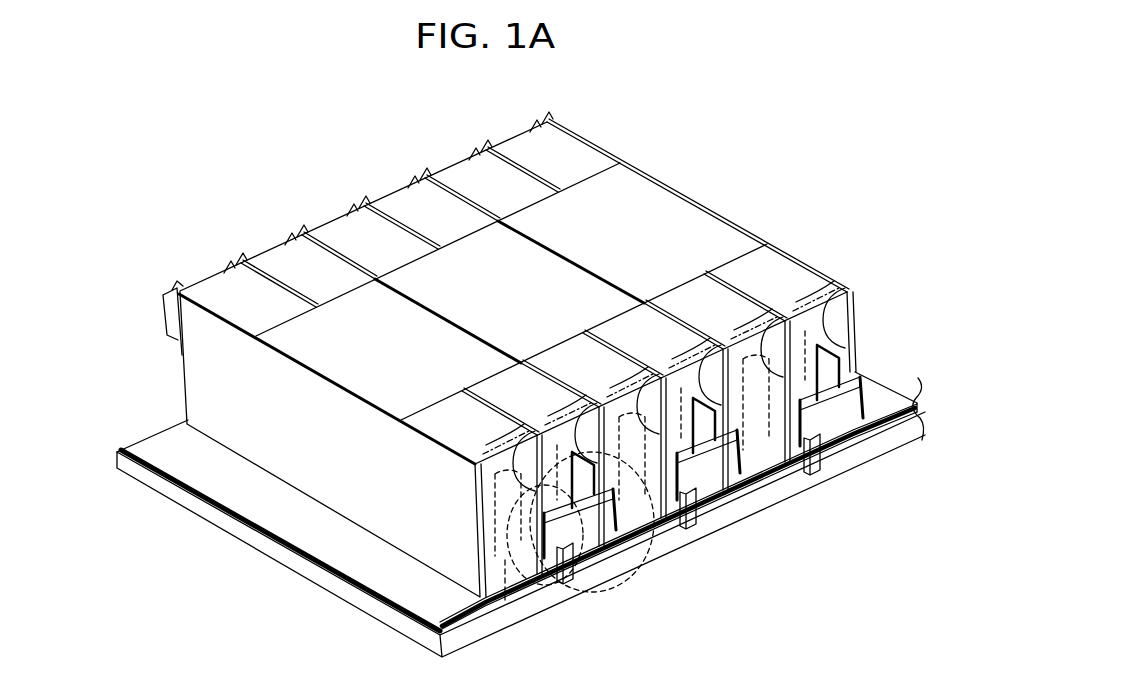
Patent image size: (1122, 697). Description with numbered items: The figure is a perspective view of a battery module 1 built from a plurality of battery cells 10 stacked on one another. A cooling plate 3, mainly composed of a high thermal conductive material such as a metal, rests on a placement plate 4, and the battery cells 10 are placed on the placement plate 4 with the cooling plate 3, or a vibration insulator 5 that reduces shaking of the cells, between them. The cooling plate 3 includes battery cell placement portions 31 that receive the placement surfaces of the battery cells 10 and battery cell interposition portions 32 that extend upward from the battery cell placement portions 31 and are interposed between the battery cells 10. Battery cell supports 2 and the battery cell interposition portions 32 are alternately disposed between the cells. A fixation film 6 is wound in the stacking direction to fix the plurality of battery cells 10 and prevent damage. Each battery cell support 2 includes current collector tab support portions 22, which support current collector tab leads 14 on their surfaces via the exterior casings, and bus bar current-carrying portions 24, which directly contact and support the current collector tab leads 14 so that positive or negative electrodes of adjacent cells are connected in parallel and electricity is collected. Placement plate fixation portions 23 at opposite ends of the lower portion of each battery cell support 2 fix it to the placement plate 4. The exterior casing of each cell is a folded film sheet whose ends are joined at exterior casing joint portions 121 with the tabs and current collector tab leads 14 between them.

The battery module 1 is at (684, 142).
The battery cell support 2 is at (484, 145).
The cooling plate 3 is at (109, 350).
The placement plate 4 is at (768, 500).
The vibration insulator 5 is at (470, 613).
The fixation film 6 is at (713, 233).
The battery cell 10 is at (213, 292).
The current collector tab lead 14 is at (545, 560).
The current collector tab support portion 22 is at (590, 498).
The placement plate fixation portion 23 is at (563, 548).
The bus bar current-carrying portion 24 is at (575, 523).
The battery cell placement portion 31 is at (180, 452).
The battery cell interposition portion 32 is at (547, 124).
The exterior casing joint portion 121 is at (517, 595).